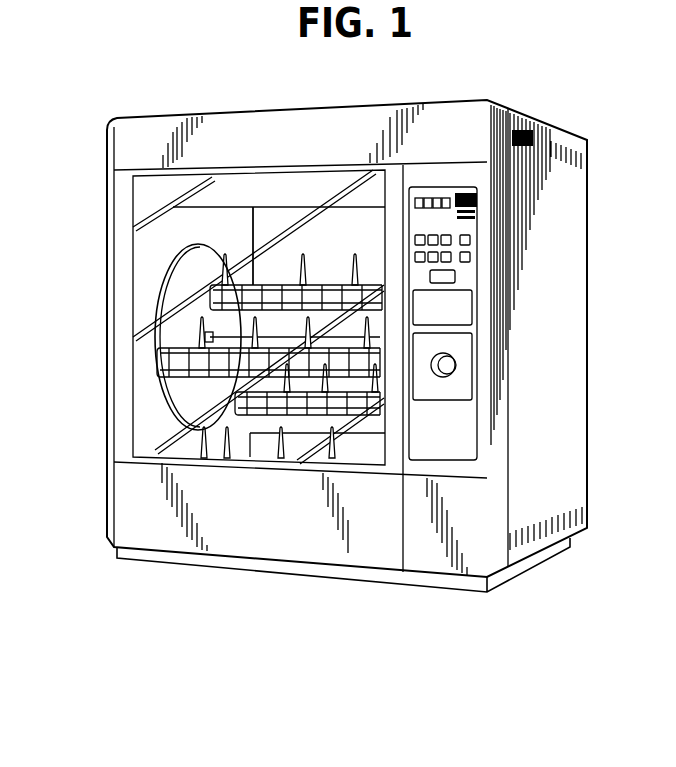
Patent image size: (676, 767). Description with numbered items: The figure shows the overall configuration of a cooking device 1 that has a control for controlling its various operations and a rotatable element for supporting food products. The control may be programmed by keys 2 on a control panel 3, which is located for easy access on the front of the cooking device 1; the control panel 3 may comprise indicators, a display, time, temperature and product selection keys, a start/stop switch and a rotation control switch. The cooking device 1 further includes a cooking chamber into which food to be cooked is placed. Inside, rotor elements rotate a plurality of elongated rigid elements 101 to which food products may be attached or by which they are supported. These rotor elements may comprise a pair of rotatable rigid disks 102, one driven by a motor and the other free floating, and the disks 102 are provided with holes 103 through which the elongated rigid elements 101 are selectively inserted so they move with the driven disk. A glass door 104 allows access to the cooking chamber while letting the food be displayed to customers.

The cooking device 1 is at (394, 100).
The keys 2 is at (477, 203).
The control panel 3 is at (428, 188).
The elongated rigid elements 101 is at (278, 285).
The rotatable rigid disks 102 is at (177, 272).
The holes 103 is at (228, 262).
The glass door 104 is at (347, 220).